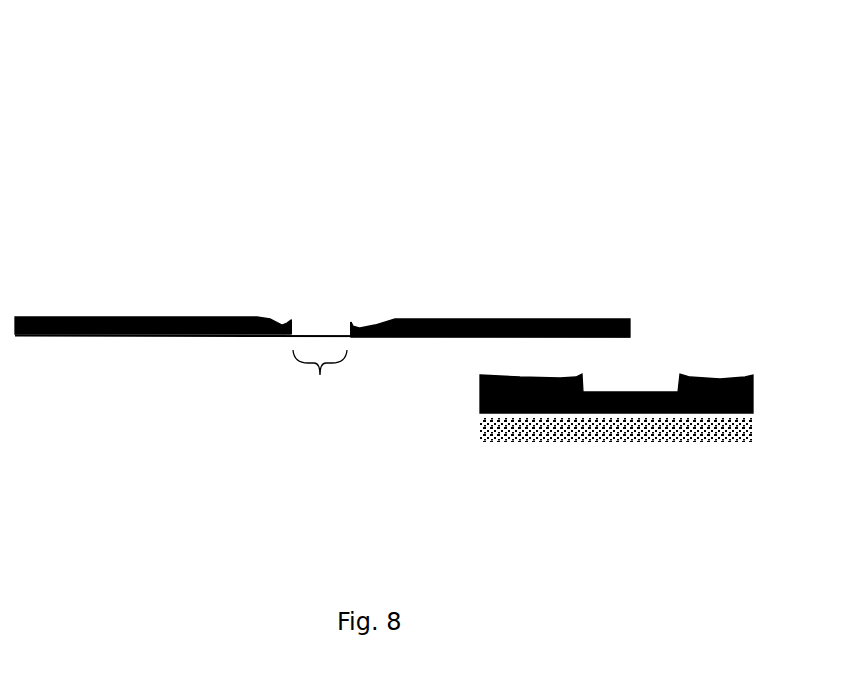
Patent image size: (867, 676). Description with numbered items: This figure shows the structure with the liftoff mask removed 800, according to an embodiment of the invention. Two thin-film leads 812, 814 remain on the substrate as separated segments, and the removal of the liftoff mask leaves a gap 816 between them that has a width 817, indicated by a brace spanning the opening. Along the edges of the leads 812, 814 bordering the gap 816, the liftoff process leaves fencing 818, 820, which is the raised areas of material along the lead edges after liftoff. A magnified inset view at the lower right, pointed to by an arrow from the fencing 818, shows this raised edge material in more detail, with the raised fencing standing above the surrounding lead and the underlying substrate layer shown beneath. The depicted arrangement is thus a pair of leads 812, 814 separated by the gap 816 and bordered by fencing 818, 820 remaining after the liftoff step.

The liftoff mask removed 800 is at (224, 148).
The lead 812 is at (168, 317).
The lead 814 is at (492, 320).
The gap 816 is at (320, 327).
The width 817 is at (307, 410).
The fencing 818 is at (573, 372).
The fencing 820 is at (352, 322).